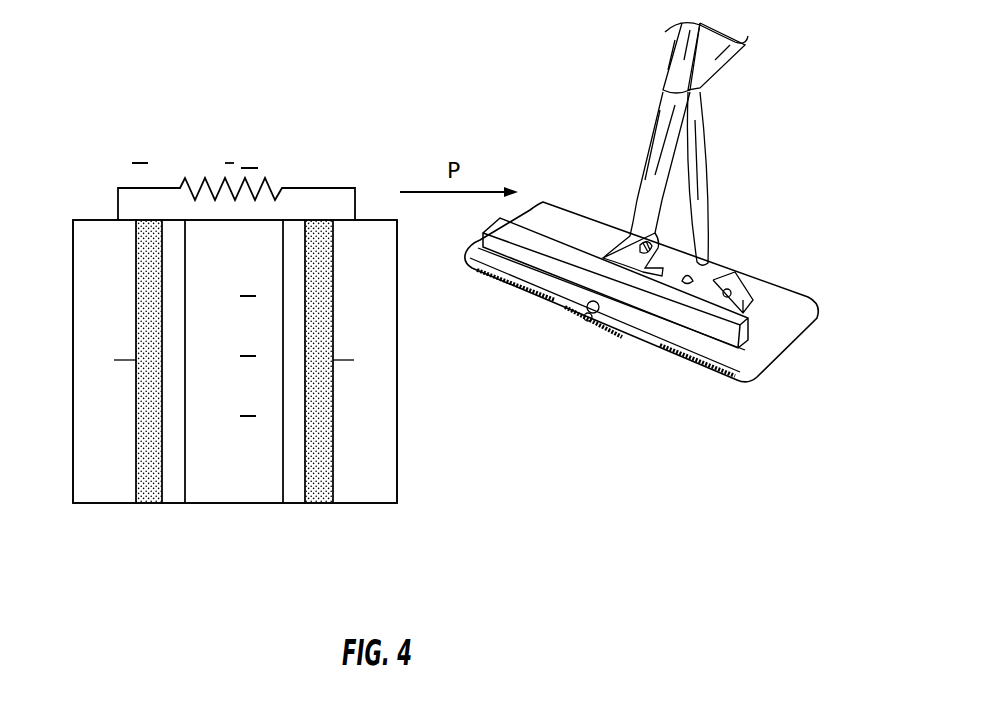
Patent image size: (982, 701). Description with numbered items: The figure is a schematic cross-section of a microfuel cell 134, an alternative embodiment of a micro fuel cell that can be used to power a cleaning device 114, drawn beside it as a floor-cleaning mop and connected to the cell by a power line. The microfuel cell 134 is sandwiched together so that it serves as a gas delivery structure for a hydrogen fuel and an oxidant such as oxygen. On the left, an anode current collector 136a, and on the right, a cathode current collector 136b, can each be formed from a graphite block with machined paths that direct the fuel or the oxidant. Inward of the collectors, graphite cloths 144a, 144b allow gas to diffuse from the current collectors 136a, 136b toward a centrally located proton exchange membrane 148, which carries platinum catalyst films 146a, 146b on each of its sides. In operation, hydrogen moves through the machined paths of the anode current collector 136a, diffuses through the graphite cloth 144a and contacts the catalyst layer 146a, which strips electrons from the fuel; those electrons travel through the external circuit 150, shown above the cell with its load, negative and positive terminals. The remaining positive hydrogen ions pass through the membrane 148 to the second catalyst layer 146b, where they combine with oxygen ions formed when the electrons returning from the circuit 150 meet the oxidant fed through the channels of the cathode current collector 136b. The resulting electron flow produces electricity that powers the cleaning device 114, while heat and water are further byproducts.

The cleaning device 114 is at (746, 205).
The microfuel cell 134 is at (444, 404).
The anode current collector 136a is at (108, 503).
The cathode current collector 136b is at (365, 503).
The graphite cloth 144a is at (148, 503).
The graphite cloth 144b is at (317, 503).
The catalyst layer 146a is at (170, 503).
The catalyst layer 146b is at (295, 503).
The proton exchange membrane 148 is at (222, 503).
The external circuit 150 is at (118, 203).